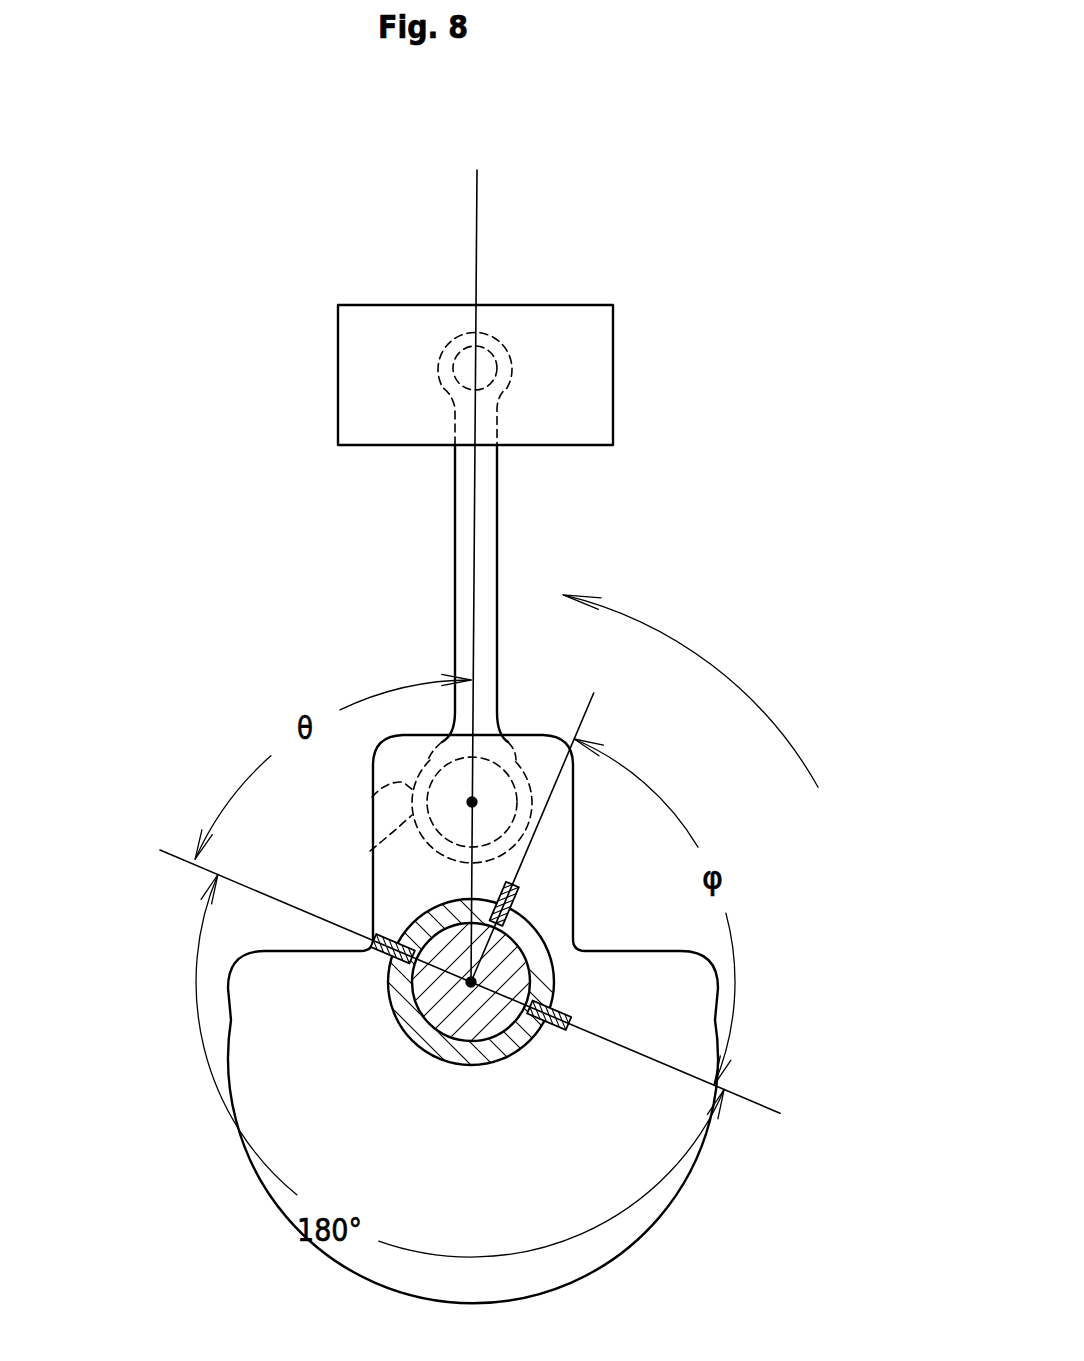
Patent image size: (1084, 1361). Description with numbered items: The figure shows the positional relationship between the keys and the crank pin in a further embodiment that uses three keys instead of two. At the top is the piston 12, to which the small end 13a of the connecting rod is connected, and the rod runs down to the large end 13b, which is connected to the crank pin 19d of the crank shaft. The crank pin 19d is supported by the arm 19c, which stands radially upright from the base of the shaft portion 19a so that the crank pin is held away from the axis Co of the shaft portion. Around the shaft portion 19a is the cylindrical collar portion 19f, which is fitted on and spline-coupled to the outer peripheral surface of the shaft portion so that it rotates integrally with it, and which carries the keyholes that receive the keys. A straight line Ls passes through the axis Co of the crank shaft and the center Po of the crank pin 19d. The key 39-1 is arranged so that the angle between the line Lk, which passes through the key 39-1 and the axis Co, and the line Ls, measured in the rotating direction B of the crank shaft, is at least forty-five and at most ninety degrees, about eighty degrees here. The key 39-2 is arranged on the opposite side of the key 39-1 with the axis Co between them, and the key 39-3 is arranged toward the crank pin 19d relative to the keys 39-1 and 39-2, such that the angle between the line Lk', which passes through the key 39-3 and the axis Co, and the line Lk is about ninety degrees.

The piston 12 is at (613, 337).
The small end 13a is at (512, 369).
The large end 13b is at (370, 851).
The shaft portion 19a is at (419, 1042).
The arm 19c is at (400, 758).
The crank pin 19d is at (372, 797).
The collar portion 19f is at (395, 1018).
The key 39-1 is at (382, 958).
The key 39-2 is at (548, 1030).
The key 39-3 is at (515, 907).
The straight line Ls is at (476, 559).
The straight line Lk is at (440, 959).
The straight line Lk' is at (554, 814).
The center of crank pin Po is at (473, 802).
The axis of shaft portion Co is at (473, 982).
The rotating direction B is at (722, 672).